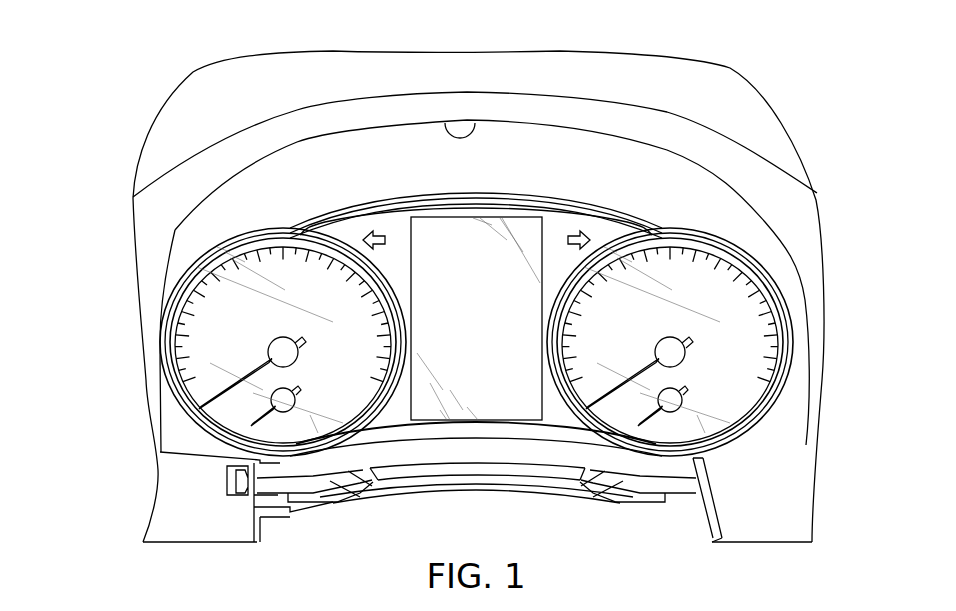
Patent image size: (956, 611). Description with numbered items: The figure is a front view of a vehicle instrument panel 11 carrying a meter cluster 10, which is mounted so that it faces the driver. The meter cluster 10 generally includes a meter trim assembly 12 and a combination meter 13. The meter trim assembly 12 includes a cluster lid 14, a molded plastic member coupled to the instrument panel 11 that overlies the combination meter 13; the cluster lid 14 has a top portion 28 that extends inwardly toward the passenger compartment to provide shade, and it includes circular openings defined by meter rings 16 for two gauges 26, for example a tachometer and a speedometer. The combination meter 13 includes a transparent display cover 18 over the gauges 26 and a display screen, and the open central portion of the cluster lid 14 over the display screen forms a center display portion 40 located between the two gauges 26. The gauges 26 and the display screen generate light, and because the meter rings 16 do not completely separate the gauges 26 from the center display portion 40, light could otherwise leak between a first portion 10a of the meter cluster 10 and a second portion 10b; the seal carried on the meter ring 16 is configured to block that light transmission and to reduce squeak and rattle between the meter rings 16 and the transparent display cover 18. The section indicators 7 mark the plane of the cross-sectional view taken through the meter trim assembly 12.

The meter cluster 10 is at (125, 153).
The first portion of the meter cluster 10a is at (603, 341).
The second portion of the meter cluster 10b is at (497, 326).
The instrument panel 11 is at (222, 97).
The meter trim assembly 12 is at (385, 272).
The combination meter 13 is at (212, 345).
The cluster lid 14 is at (658, 159).
The meter ring 16 is at (757, 415).
The transparent display cover 18 is at (393, 232).
The gauges 26 is at (287, 272).
The top portion 28 is at (446, 124).
The center display portion 40 is at (529, 230).
The section line 7 is at (117, 277).